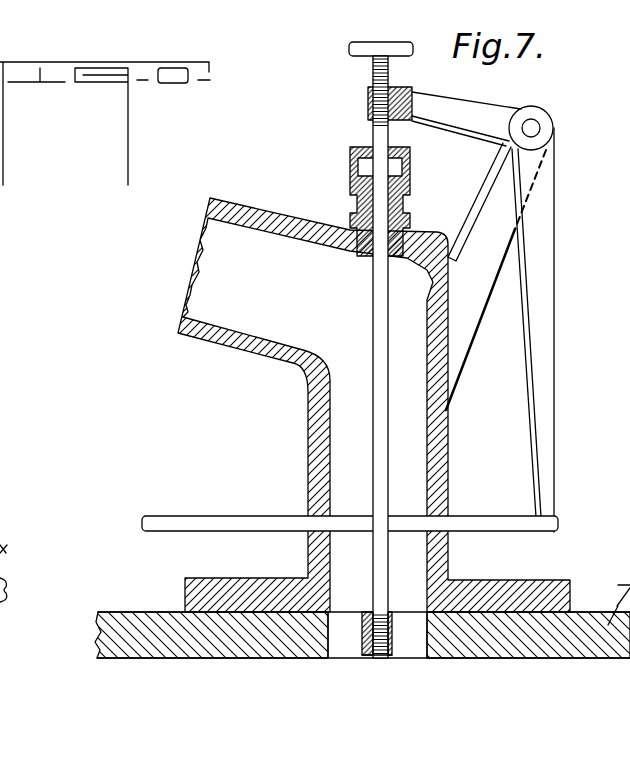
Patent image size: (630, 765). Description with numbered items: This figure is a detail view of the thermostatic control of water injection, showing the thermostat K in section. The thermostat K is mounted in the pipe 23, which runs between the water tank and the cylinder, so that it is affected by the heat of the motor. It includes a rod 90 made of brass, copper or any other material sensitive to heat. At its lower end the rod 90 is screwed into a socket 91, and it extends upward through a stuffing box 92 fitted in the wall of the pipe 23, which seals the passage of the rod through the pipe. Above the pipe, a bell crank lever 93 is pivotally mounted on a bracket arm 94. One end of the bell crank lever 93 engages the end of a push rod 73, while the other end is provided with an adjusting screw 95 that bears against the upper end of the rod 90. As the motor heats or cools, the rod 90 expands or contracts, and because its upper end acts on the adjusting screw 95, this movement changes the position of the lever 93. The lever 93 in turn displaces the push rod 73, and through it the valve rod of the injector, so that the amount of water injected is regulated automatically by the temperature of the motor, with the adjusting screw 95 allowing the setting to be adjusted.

The pipe 23 is at (245, 318).
The thermostat K is at (478, 297).
The bell crank lever 93 is at (541, 230).
The bracket arm 94 is at (497, 180).
The push rod 73 is at (219, 517).
The stuffing box 92 is at (350, 185).
The adjusting screw 95 is at (372, 80).
The rod 90 is at (377, 452).
The socket 91 is at (392, 658).